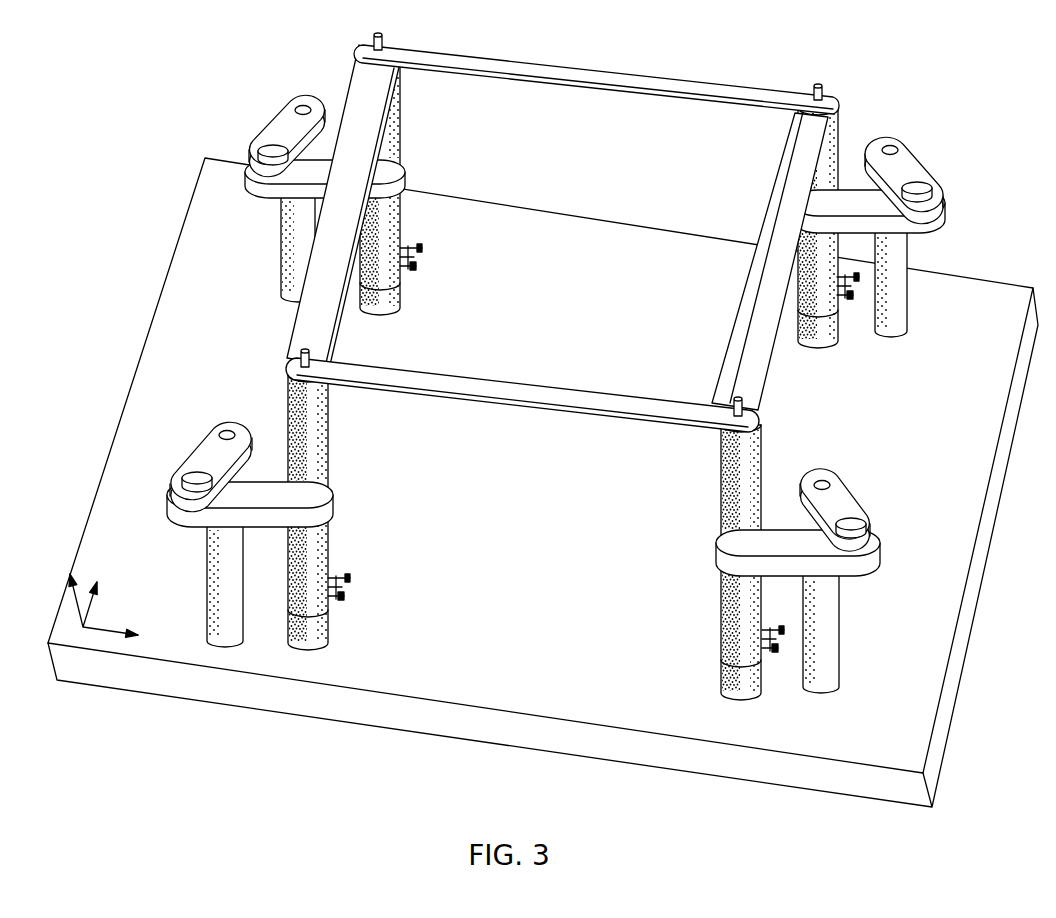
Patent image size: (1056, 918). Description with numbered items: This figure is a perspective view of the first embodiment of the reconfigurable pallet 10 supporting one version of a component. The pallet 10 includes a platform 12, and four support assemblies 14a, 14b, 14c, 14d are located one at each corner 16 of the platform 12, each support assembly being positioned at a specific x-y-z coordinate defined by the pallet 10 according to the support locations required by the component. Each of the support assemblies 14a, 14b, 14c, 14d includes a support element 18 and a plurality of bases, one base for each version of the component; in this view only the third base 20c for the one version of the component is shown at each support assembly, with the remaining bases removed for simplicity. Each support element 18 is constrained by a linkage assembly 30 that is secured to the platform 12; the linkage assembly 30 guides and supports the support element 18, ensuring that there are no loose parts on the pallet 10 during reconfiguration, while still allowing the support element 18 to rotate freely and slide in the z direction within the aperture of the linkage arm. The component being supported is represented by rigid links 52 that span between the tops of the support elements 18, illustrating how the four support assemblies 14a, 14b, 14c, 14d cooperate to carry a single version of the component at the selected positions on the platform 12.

The pallet 10 is at (543, 407).
The platform 12 is at (543, 482).
The support assembly 14a is at (944, 151).
The support assembly 14b is at (227, 122).
The support assembly 14c is at (344, 538).
The support assembly 14d is at (678, 545).
The corner 16 is at (224, 315).
The support element 18 is at (398, 117).
The third base 20c is at (393, 297).
The linkage assembly 30 is at (298, 77).
The rigid link 52 is at (707, 88).